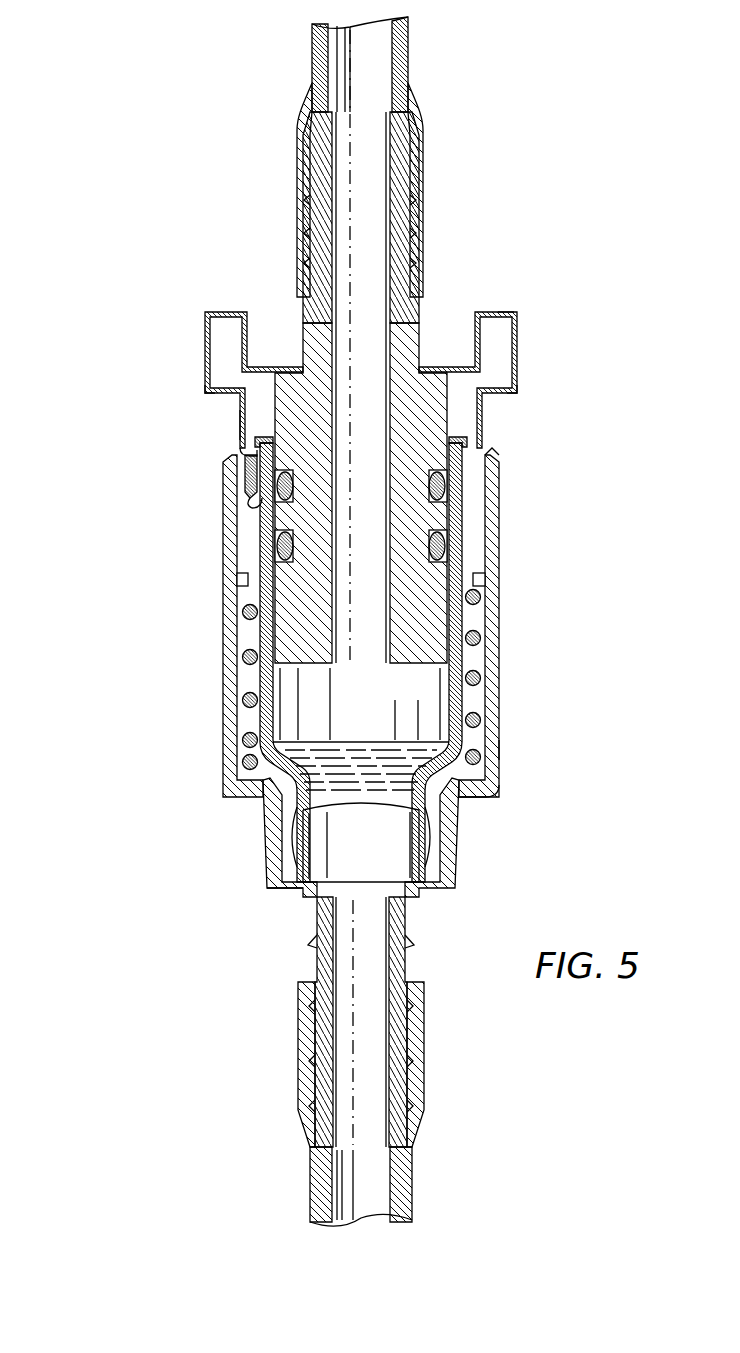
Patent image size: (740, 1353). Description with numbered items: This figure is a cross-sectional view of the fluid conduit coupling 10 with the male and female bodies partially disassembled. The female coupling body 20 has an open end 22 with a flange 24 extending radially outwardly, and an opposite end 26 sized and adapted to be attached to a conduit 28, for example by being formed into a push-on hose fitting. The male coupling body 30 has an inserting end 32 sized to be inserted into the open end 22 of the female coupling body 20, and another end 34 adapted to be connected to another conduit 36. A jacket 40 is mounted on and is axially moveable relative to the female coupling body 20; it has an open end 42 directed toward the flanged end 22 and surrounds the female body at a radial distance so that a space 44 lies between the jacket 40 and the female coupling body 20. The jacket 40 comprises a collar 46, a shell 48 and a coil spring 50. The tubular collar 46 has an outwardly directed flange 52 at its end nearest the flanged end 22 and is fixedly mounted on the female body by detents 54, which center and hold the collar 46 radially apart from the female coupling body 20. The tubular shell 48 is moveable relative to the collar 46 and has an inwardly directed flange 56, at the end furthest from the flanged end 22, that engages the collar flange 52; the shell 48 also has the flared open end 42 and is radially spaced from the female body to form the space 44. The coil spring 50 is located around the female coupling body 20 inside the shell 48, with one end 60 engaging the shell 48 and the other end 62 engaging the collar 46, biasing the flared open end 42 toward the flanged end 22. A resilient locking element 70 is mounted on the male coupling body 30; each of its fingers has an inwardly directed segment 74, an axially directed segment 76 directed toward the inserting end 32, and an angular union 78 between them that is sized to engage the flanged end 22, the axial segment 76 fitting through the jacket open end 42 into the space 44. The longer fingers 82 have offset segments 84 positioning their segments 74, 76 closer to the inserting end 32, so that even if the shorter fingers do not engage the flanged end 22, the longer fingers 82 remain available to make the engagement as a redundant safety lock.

The fluid conduit coupling 10 is at (112, 543).
The female coupling body 20 is at (297, 895).
The open end 22 is at (465, 426).
The flange 24 is at (493, 362).
The end 26 is at (400, 1080).
The conduit 28 is at (410, 1190).
The male coupling body 30 is at (415, 396).
The inserting end 32 is at (413, 670).
The end 34 is at (405, 186).
The conduit 36 is at (318, 56).
The jacket 40 is at (499, 746).
The open end 42 is at (500, 460).
The space 44 is at (250, 520).
The collar 46 is at (455, 830).
The shell 48 is at (240, 735).
The coil spring 50 is at (243, 700).
The flange 52 is at (480, 775).
The detents 54 is at (277, 855).
The flange 56 is at (465, 800).
The end 60 is at (483, 588).
The end 62 is at (243, 764).
The resilient locking element 70 is at (508, 311).
The inwardly directed segment 74 is at (245, 443).
The axially directed segment 76 is at (250, 478).
The angular union 78 is at (245, 468).
The longer fingers 82 is at (204, 391).
The offset segments 84 is at (240, 420).